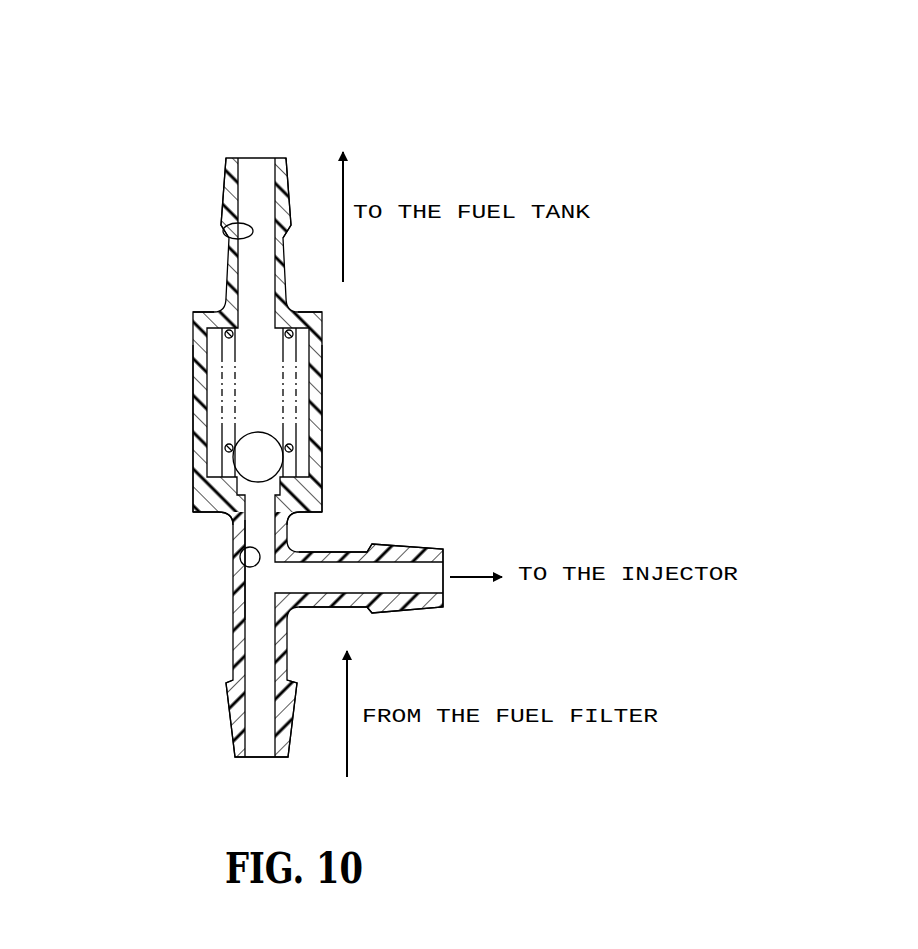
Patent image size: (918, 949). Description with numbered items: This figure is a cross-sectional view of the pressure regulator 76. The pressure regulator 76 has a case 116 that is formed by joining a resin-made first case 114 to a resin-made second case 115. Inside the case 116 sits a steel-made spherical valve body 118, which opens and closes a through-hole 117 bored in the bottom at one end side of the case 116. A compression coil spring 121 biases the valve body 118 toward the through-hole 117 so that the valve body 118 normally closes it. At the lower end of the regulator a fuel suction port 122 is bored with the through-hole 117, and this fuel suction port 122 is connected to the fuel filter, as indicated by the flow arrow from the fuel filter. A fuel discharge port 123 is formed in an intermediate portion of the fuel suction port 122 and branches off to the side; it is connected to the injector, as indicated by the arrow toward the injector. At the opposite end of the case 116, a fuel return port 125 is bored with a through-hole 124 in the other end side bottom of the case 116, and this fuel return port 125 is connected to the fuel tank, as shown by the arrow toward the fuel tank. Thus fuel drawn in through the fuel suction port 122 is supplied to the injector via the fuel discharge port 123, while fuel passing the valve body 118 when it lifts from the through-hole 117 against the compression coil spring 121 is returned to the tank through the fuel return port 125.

The pressure regulator 76 is at (238, 118).
The fuel return port 125 is at (227, 181).
The through-hole 124 is at (225, 231).
The second case 115 is at (199, 323).
The case 116 is at (184, 412).
The compression coil spring 121 is at (222, 338).
The valve body 118 is at (248, 458).
The first case 114 is at (217, 513).
The through-hole 117 is at (255, 568).
The fuel discharge port 123 is at (372, 546).
The fuel suction port 122 is at (228, 690).